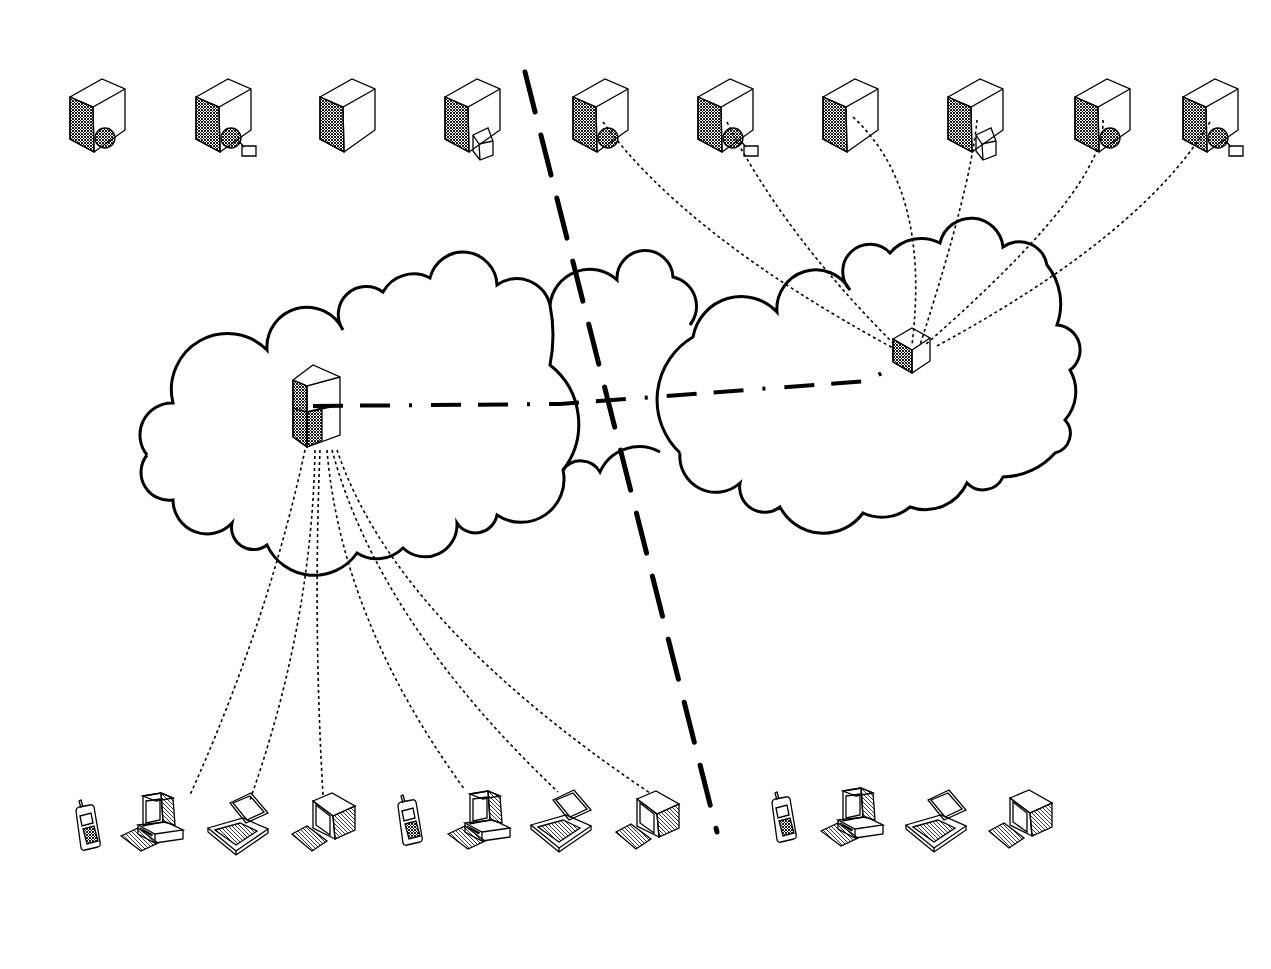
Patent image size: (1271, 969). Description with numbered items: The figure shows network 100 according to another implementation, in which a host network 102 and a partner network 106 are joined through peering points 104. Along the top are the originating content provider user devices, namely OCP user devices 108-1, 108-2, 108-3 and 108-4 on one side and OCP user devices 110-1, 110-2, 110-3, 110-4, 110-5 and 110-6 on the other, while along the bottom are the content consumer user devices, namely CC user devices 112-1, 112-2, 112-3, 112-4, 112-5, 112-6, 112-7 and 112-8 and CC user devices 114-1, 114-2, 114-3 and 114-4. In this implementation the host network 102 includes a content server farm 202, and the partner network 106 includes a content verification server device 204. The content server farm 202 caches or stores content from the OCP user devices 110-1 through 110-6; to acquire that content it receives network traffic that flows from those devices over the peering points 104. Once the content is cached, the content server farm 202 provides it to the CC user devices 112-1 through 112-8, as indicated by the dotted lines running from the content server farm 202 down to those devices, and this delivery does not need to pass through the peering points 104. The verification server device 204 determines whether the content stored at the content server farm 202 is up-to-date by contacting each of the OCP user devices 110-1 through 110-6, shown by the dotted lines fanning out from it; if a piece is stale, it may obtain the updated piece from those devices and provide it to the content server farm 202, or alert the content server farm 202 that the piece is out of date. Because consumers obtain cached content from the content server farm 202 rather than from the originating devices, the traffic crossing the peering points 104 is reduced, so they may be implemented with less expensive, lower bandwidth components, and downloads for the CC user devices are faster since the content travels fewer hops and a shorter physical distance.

The network 100 is at (656, 467).
The host network 102 is at (146, 438).
The peering points 104 is at (573, 480).
The partner network 106 is at (1083, 372).
The originating content provider user device 108-1 is at (97, 106).
The originating content provider user device 108-2 is at (226, 108).
The originating content provider user device 108-3 is at (347, 106).
The originating content provider user device 108-4 is at (472, 110).
The originating content provider user device 110-1 is at (600, 106).
The originating content provider user device 110-2 is at (728, 108).
The originating content provider user device 110-3 is at (850, 106).
The originating content provider user device 110-4 is at (975, 110).
The originating content provider user device 110-5 is at (1102, 106).
The originating content provider user device 110-6 is at (1213, 108).
The content consumer user device 112-1 is at (90, 837).
The content consumer user device 112-2 is at (152, 834).
The content consumer user device 112-3 is at (238, 834).
The content consumer user device 112-4 is at (323, 834).
The content consumer user device 112-5 is at (410, 834).
The content consumer user device 112-6 is at (479, 832).
The content consumer user device 112-7 is at (561, 831).
The content consumer user device 112-8 is at (647, 832).
The content consumer user device 114-1 is at (783, 832).
The content consumer user device 114-2 is at (852, 830).
The content consumer user device 114-3 is at (936, 832).
The content consumer user device 114-4 is at (1020, 830).
The content server farm 202 is at (323, 383).
The content verification server device 204 is at (917, 373).